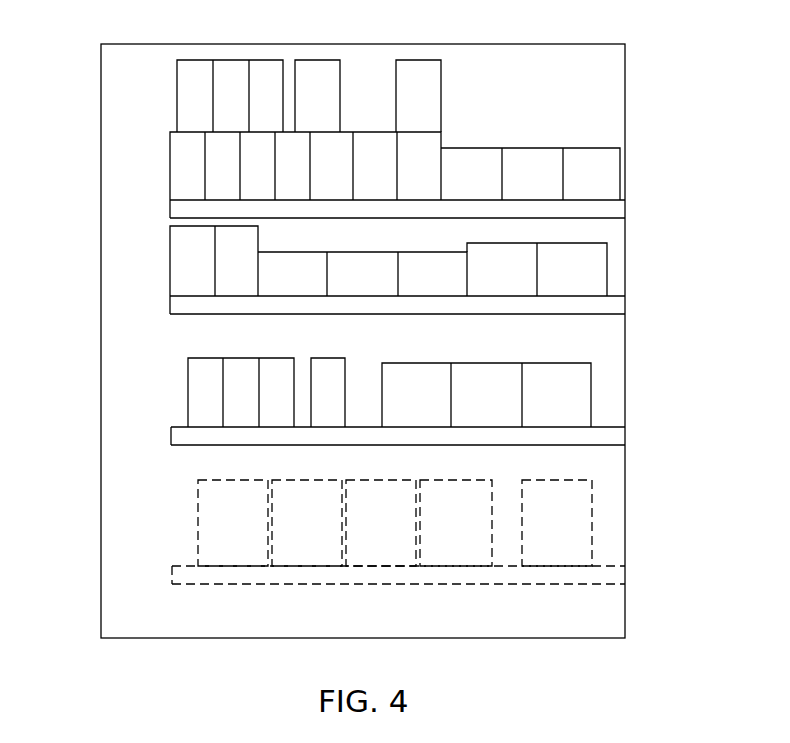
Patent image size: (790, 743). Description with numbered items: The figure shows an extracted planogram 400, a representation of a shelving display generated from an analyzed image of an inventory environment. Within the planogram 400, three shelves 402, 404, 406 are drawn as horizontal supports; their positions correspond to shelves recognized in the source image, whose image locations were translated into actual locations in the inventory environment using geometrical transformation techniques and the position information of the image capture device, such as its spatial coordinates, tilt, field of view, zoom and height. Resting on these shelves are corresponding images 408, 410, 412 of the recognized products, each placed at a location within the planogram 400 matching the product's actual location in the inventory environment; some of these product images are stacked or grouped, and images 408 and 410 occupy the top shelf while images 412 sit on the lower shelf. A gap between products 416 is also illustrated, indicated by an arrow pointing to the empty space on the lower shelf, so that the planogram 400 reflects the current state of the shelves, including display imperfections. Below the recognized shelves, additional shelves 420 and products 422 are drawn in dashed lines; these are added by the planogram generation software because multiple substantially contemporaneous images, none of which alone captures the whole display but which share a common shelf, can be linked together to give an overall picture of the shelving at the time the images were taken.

The extracted planogram 400 is at (101, 322).
The shelf 402 is at (615, 208).
The shelf 404 is at (615, 303).
The shelf 406 is at (618, 435).
The image of recognized products 408 is at (170, 167).
The image of recognized products 410 is at (441, 95).
The image of recognized products 412 is at (328, 358).
The gap between products 416 is at (363, 376).
The additional shelves 420 is at (618, 576).
The products 422 is at (225, 532).